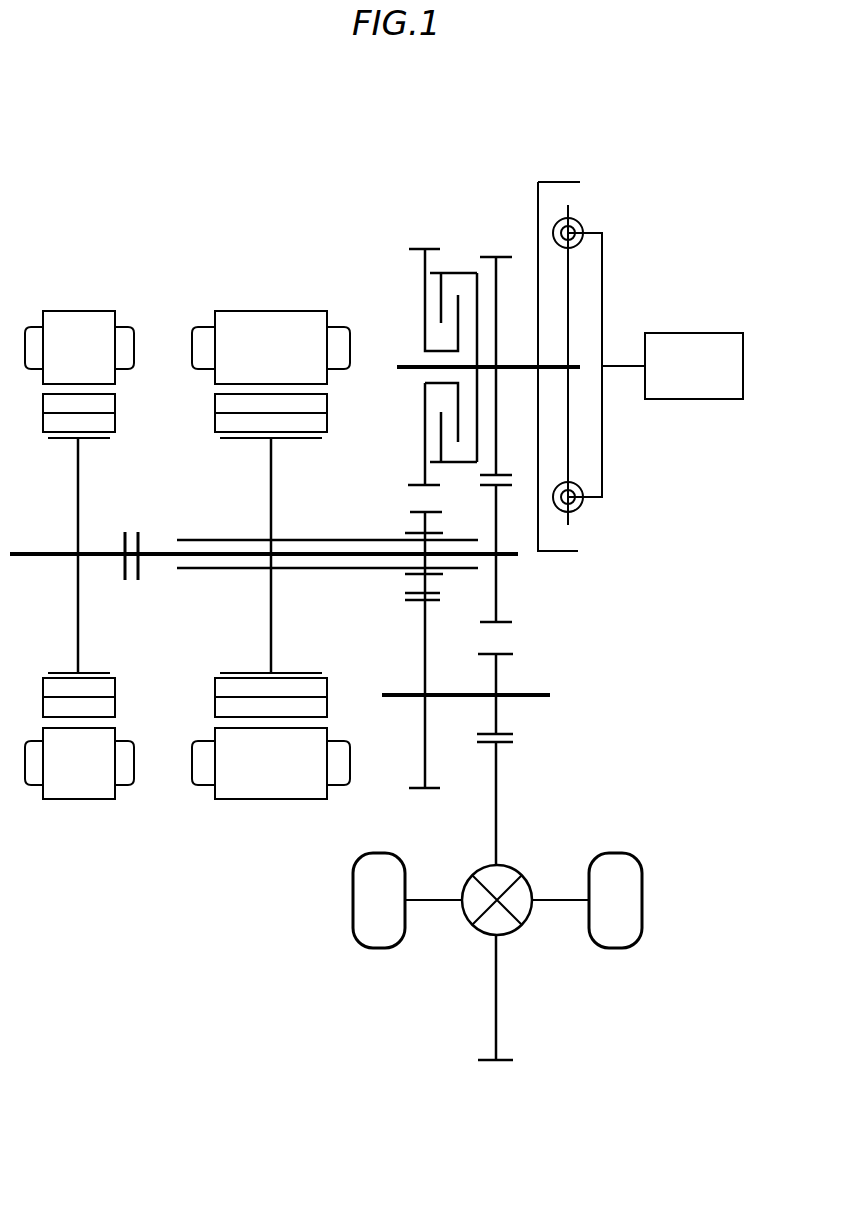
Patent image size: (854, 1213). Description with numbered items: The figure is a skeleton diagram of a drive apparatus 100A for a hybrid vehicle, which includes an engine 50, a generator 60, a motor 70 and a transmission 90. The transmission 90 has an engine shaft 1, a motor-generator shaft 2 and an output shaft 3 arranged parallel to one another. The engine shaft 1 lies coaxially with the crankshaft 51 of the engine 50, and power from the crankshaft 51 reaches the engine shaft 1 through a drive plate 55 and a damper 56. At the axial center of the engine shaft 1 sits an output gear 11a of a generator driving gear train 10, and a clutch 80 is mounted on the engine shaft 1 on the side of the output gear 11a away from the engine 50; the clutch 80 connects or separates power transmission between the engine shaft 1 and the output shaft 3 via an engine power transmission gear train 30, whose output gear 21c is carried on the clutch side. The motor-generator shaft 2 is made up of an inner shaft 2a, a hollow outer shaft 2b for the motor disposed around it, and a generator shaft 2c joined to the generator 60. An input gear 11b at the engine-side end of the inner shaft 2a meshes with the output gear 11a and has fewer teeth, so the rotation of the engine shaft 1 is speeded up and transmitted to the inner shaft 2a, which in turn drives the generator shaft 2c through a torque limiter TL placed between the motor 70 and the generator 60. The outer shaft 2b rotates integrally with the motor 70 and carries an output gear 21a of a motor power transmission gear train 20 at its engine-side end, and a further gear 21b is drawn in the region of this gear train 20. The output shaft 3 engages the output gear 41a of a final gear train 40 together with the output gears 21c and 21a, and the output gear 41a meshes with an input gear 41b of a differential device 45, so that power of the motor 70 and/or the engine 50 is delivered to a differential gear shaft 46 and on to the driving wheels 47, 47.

The drive apparatus 100A is at (643, 148).
The transmission 90 is at (436, 176).
The engine 50 is at (716, 332).
The crankshaft 51 is at (620, 362).
The drive plate 55 is at (604, 258).
The damper 56 is at (585, 222).
The engine shaft 1 is at (519, 362).
The generator driving gear train 10 is at (513, 532).
The output gear 11a is at (502, 255).
The input gear 11b is at (515, 625).
The clutch 80 is at (455, 270).
The output gear 21c is at (428, 248).
The engine power transmission gear train 30 is at (415, 476).
The output gear 21a is at (410, 512).
The motor power transmission gear train 20 is at (397, 601).
The output gear 21b is at (420, 792).
The motor-generator shaft 2 is at (218, 623).
The inner shaft 2a is at (152, 562).
The outer shaft for the motor 2b is at (200, 572).
The generator shaft 2c is at (104, 562).
The torque limiter TL is at (131, 532).
The generator 60 is at (78, 308).
The motor 70 is at (271, 308).
The output gear 41a is at (515, 652).
The final gear train 40 is at (508, 673).
The output shaft 3 is at (538, 700).
The differential device 45 is at (478, 930).
The differential gear shaft 46 is at (565, 897).
The driving wheels 47 is at (378, 950).
The input gear 41b is at (503, 1065).